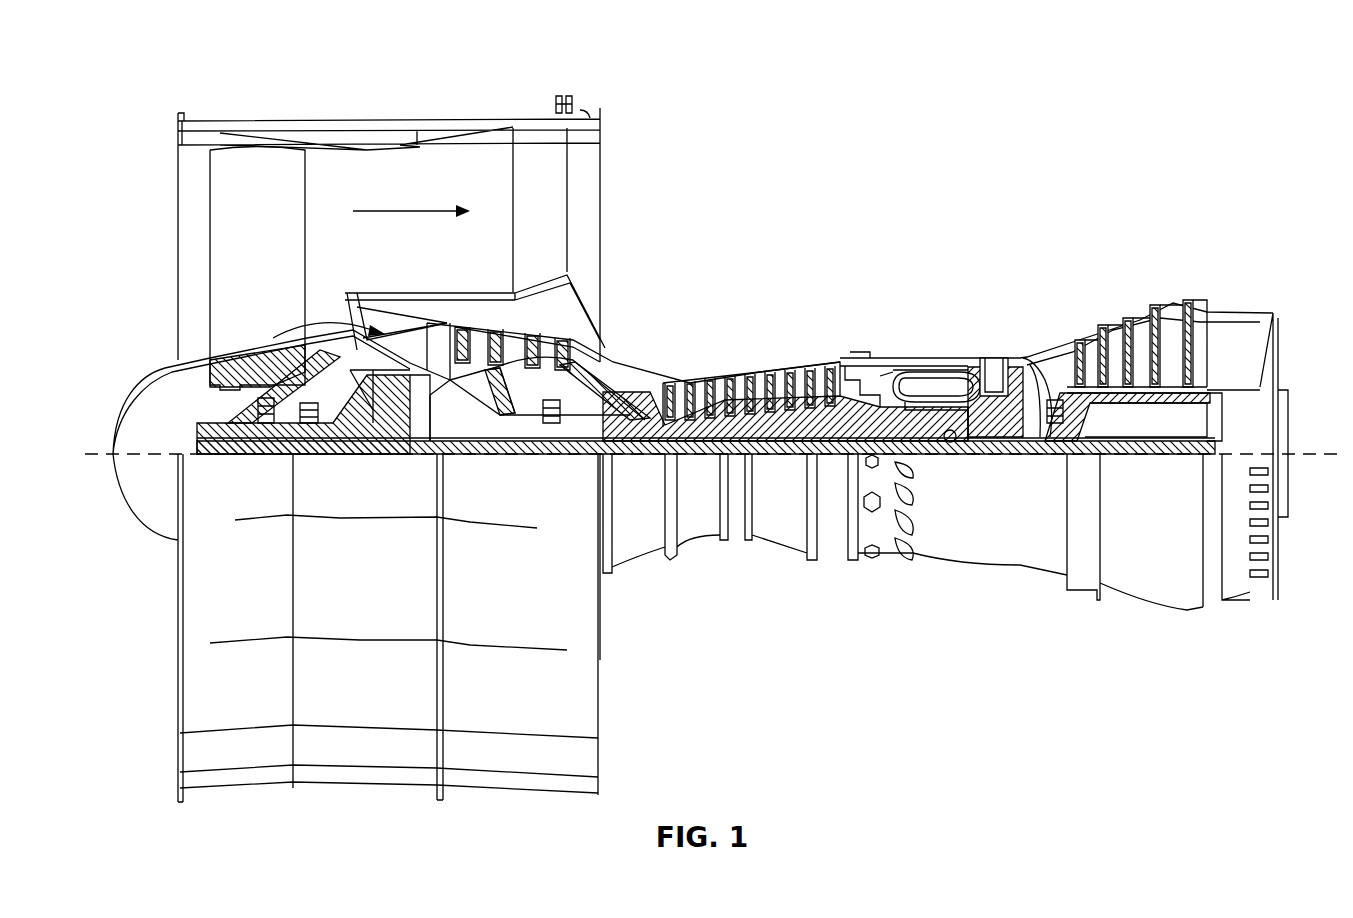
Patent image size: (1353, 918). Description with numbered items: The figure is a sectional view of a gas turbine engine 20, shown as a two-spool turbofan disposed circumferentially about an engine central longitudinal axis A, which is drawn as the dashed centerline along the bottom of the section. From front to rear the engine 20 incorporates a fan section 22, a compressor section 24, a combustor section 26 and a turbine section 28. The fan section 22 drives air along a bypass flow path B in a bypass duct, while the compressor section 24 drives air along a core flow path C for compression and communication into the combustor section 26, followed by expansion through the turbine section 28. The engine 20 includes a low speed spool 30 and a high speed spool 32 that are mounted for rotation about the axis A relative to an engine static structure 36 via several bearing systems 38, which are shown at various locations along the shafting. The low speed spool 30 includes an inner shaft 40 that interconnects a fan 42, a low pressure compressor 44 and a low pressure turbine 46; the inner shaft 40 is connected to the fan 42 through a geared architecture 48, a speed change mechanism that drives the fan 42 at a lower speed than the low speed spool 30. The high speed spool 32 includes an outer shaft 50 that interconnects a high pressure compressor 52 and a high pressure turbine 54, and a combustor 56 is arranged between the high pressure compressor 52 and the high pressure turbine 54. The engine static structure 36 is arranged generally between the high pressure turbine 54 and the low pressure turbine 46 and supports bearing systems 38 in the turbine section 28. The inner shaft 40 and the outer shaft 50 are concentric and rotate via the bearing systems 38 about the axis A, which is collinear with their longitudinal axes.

The gas turbine engine 20 is at (1168, 98).
The fan section 22 is at (251, 120).
The compressor section 24 is at (704, 225).
The combustor section 26 is at (916, 225).
The turbine section 28 is at (1096, 225).
The low speed spool 30 is at (799, 456).
The high speed spool 32 is at (848, 410).
The engine static structure 36 is at (844, 556).
The bearing systems 38 is at (267, 422).
The inner shaft 40 is at (620, 455).
The fan 42 is at (270, 244).
The low pressure compressor 44 is at (522, 337).
The low pressure turbine 46 is at (1143, 330).
The geared architecture 48 is at (390, 425).
The outer shaft 50 is at (960, 441).
The high pressure compressor 52 is at (762, 418).
The high pressure turbine 54 is at (998, 358).
The combustor 56 is at (921, 383).
The engine central longitudinal axis A is at (1298, 452).
The bypass flow path B is at (420, 210).
The core flow path C is at (294, 330).